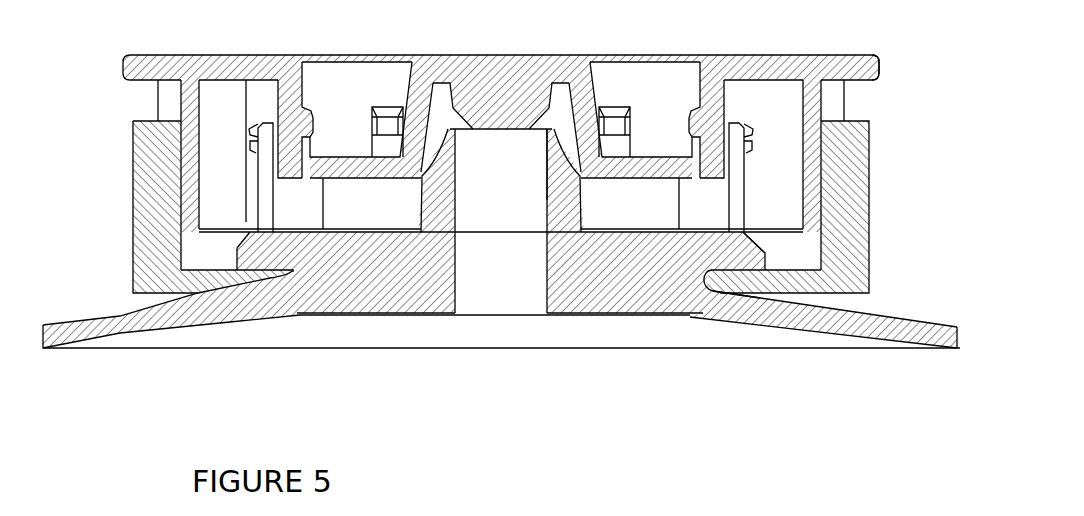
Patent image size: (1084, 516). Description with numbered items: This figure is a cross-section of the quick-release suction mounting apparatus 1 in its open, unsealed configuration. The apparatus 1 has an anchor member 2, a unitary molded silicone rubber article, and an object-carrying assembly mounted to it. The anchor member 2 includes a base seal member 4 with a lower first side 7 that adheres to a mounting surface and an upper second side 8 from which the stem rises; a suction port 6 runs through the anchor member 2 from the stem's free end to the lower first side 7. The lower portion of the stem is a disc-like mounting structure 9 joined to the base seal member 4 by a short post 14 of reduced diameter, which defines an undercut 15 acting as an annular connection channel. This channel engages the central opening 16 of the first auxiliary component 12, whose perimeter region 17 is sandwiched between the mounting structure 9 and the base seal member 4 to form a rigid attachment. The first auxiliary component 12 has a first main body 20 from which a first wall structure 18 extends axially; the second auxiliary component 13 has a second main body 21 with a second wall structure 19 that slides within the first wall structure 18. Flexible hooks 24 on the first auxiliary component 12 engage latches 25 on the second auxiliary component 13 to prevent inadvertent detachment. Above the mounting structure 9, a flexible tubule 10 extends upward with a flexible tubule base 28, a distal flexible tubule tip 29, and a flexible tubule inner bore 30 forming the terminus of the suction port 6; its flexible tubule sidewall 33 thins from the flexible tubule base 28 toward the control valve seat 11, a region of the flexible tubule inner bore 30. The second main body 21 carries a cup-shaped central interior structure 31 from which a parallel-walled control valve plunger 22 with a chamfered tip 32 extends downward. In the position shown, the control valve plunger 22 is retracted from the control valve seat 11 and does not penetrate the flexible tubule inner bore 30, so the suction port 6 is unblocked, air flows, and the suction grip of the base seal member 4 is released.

The quick-release suction mounting apparatus 1 is at (128, 362).
The anchor member 2 is at (411, 318).
The base seal member 4 is at (746, 310).
The suction port 6 is at (498, 294).
The lower first side 7 is at (817, 330).
The upper second side 8 is at (885, 318).
The mounting structure 9 is at (749, 256).
The flexible tubule 10 is at (567, 131).
The control valve seat 11 is at (453, 124).
The first auxiliary component 12 is at (882, 205).
The second auxiliary component 13 is at (806, 50).
The short post 14 is at (648, 276).
The undercut 15 is at (716, 284).
The central opening 16 is at (294, 273).
The perimeter region 17 is at (264, 281).
The first wall structure 18 is at (133, 243).
The second wall structure 19 is at (182, 98).
The first main body 20 is at (203, 283).
The second main body 21 is at (218, 66).
The control valve plunger 22 is at (497, 112).
The flexible hooks 24 is at (256, 135).
The latches 25 is at (253, 148).
The flexible tubule base 28 is at (562, 228).
The flexible tubule tip 29 is at (563, 126).
The flexible tubule inner bore 30 is at (458, 198).
The central interior structure 31 is at (385, 78).
The chamfered tip 32 is at (520, 124).
The flexible tubule sidewall 33 is at (557, 189).